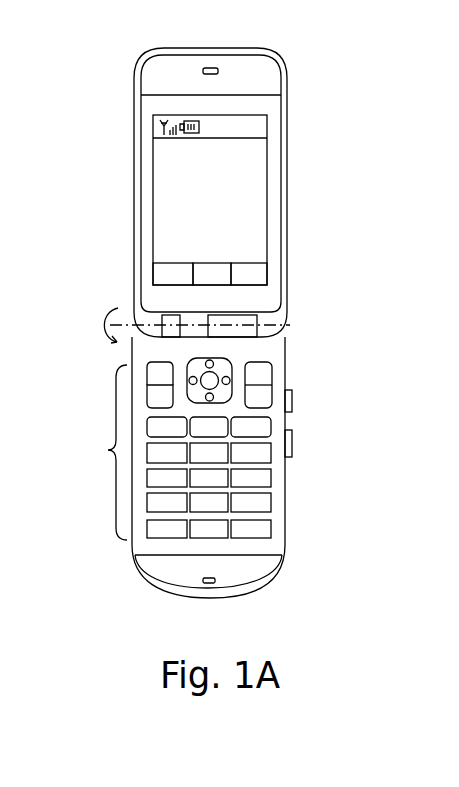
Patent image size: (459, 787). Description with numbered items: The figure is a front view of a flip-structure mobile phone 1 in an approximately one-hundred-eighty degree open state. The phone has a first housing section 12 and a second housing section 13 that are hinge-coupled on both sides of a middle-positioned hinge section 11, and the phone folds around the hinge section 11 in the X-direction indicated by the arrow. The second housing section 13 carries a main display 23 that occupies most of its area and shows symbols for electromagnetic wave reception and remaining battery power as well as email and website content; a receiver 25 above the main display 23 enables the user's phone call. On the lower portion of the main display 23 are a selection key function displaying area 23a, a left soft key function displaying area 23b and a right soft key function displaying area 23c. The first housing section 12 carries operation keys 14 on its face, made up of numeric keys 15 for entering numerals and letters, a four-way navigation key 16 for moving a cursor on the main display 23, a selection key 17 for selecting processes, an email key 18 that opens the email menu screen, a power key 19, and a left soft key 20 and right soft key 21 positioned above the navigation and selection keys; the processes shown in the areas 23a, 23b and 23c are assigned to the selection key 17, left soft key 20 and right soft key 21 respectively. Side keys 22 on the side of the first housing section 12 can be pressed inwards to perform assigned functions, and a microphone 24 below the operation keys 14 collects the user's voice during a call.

The mobile phone 1 is at (220, 27).
The hinge section 11 is at (258, 317).
The first housing section 12 is at (286, 553).
The second housing section 13 is at (287, 190).
The operation keys 14 is at (97, 460).
The numeric keys 15 is at (264, 471).
The 4-way navigation key 16 is at (217, 358).
The selection key 17 is at (160, 384).
The email key 18 is at (147, 397).
The power key 19 is at (272, 427).
The left soft key 20 is at (214, 375).
The right soft key 21 is at (272, 375).
The side keys 22 is at (293, 400).
The main display 23 is at (267, 153).
The selection key function displaying area 23a is at (205, 263).
The left soft key function displaying area 23b is at (153, 272).
The right soft key function displaying area 23c is at (267, 270).
The microphone 24 is at (215, 580).
The receiver 25 is at (218, 71).